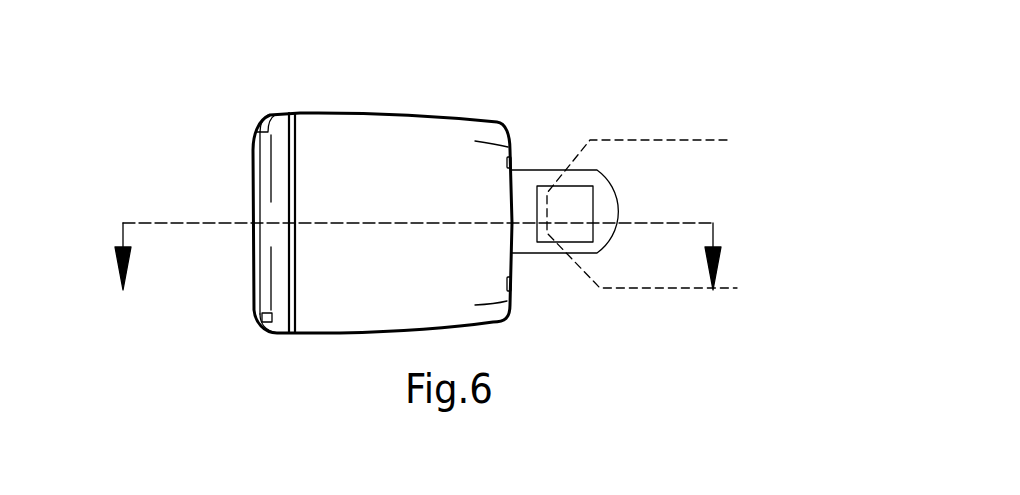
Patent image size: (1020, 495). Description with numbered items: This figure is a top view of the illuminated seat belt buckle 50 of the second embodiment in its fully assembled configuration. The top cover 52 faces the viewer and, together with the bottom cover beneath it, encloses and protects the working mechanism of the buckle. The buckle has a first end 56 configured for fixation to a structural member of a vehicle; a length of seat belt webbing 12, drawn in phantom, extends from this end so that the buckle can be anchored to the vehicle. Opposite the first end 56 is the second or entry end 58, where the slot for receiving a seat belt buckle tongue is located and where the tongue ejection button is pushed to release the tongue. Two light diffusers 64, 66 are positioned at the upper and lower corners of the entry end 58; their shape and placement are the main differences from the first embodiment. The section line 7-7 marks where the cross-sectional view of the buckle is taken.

The section line 7- 7 is at (418, 270).
The seat belt webbing 12 is at (610, 153).
The seat belt buckle 50 is at (368, 221).
The top cover 52 is at (418, 153).
The first end 56 is at (511, 150).
The second or entry end 58 is at (254, 167).
The light diffuser 64 is at (259, 128).
The light diffuser 66 is at (256, 323).